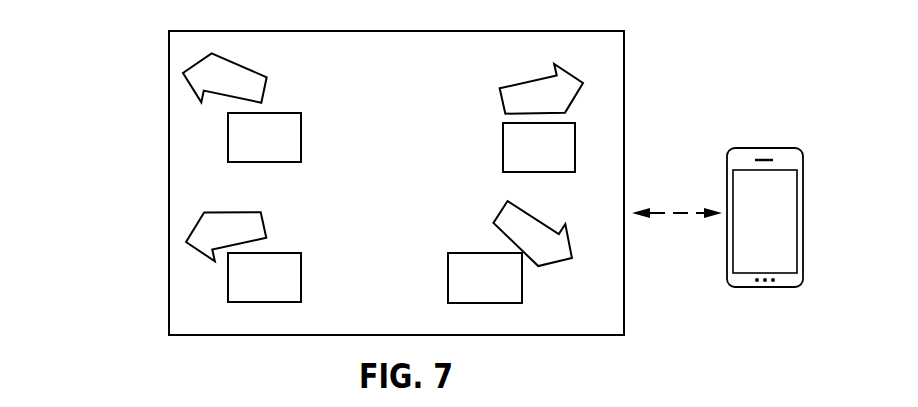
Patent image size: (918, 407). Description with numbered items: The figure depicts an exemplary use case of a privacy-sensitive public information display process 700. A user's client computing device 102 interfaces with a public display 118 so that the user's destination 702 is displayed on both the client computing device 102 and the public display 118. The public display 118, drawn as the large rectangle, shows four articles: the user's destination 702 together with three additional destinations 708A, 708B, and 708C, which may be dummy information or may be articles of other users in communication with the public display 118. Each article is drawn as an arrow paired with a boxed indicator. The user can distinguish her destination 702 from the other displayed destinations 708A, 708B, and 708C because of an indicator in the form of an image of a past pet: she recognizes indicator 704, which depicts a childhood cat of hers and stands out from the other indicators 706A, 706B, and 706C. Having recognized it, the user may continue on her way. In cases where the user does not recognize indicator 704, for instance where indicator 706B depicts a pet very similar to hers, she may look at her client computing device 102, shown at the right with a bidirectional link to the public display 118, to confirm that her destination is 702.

The privacy-sensitive public information display process 700 is at (114, 60).
The public display 118 is at (554, 307).
The user's destination 702 is at (640, 142).
The indicator 704 is at (522, 158).
The indicator 706A is at (242, 148).
The indicator 706B is at (242, 288).
The indicator 706C is at (462, 288).
The additional destination 708A is at (223, 81).
The additional destination 708B is at (225, 234).
The additional destination 708C is at (536, 235).
The client computing device 102 is at (765, 235).